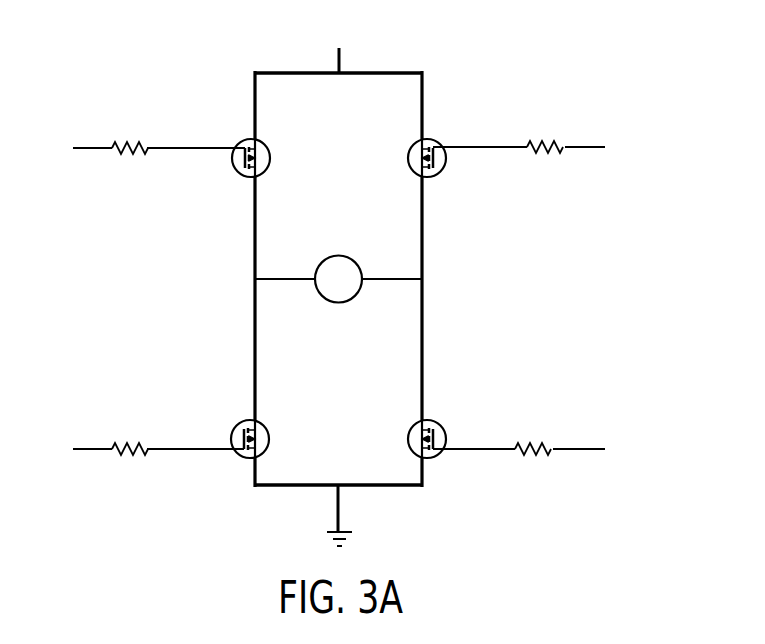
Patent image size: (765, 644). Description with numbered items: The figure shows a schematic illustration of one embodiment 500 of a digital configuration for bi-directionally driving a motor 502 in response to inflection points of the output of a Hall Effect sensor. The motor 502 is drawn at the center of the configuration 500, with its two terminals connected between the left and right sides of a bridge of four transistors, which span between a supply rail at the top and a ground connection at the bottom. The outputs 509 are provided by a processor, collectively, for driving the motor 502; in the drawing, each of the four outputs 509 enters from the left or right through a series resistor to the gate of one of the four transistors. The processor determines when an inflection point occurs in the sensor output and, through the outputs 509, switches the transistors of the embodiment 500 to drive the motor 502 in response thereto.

The embodiment of a digital configuration 500 is at (340, 280).
The motor 502 is at (338, 255).
The outputs 509 is at (340, 298).